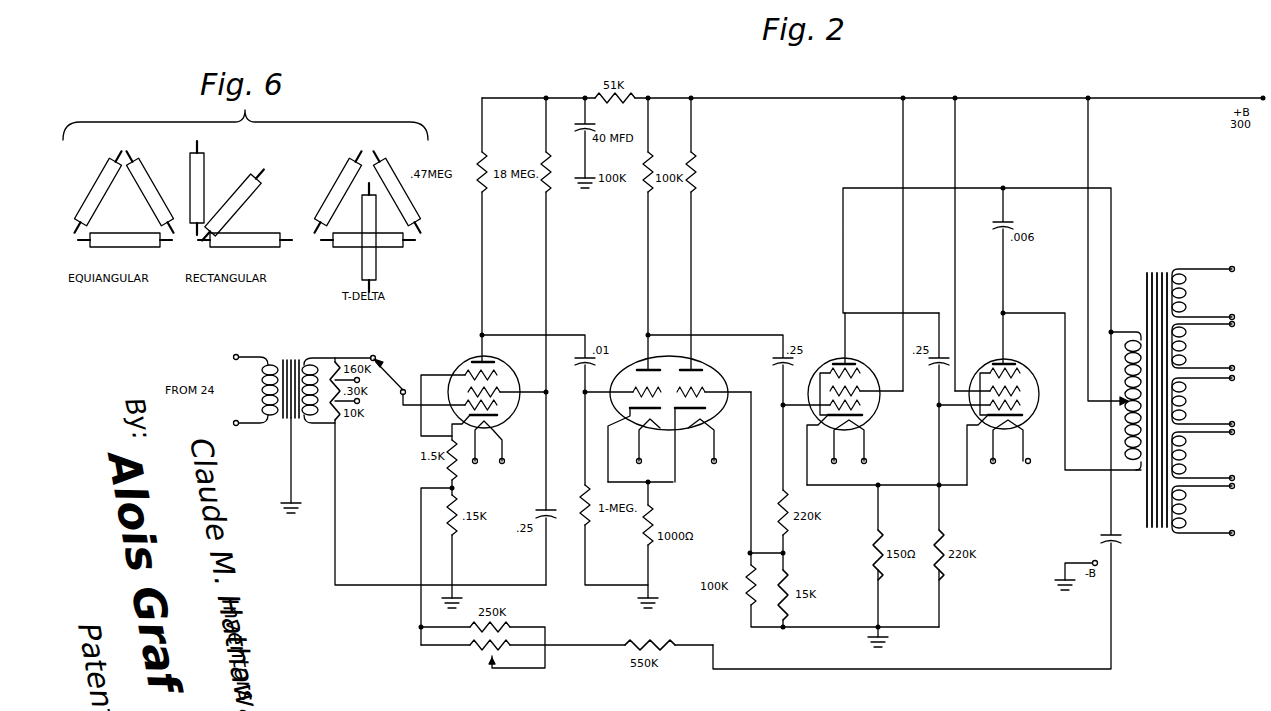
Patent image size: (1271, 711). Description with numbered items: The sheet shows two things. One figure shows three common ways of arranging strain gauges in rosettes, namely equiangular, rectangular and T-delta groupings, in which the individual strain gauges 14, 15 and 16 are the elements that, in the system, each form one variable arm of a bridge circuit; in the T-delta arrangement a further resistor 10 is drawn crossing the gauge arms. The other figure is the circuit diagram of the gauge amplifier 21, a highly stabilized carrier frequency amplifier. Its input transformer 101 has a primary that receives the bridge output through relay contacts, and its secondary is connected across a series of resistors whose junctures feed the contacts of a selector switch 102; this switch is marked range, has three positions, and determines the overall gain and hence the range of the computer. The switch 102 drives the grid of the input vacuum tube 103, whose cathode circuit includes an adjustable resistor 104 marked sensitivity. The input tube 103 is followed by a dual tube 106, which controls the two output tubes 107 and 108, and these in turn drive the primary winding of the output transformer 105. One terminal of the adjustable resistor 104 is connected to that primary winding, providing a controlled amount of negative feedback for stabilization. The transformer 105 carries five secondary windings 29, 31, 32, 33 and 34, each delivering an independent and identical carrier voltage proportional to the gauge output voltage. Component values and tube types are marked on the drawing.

In FIG. 6, the resistor of T-delta network 10 is at (368, 216).
In FIG. 6, the strain gauge 14 is at (92, 174).
In FIG. 6, the strain gauge 15 is at (150, 172).
In FIG. 6, the strain gauge 16 is at (128, 248).
In FIG. 2, the gauge amplifier 21 is at (775, 268).
In FIG. 2, the secondary winding 29 is at (1190, 295).
In FIG. 2, the secondary winding 31 is at (1190, 348).
In FIG. 2, the secondary winding 32 is at (1190, 402).
In FIG. 2, the secondary winding 33 is at (1190, 456).
In FIG. 2, the secondary winding 34 is at (1190, 510).
In FIG. 2, the input transformer 101 is at (290, 356).
In FIG. 2, the selector switch 102 is at (388, 357).
In FIG. 2, the input vacuum tube 103 is at (462, 355).
In FIG. 2, the adjustable resistor 104 is at (470, 655).
In FIG. 2, the transformer 105 is at (1165, 272).
In FIG. 2, the dual tube 106 is at (712, 380).
In FIG. 2, the output tube 107 is at (832, 360).
In FIG. 2, the output tube 108 is at (990, 360).